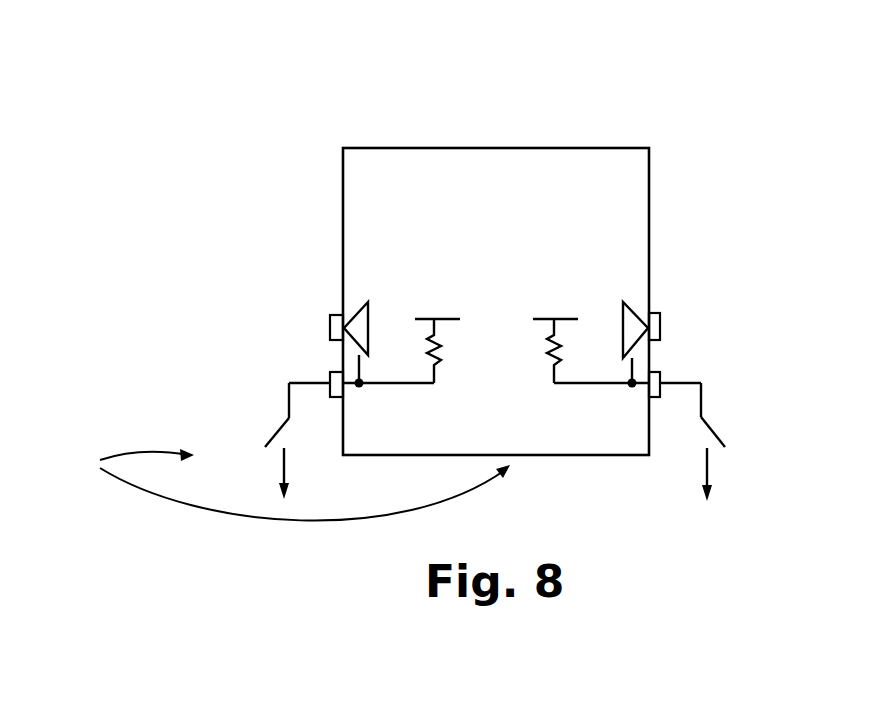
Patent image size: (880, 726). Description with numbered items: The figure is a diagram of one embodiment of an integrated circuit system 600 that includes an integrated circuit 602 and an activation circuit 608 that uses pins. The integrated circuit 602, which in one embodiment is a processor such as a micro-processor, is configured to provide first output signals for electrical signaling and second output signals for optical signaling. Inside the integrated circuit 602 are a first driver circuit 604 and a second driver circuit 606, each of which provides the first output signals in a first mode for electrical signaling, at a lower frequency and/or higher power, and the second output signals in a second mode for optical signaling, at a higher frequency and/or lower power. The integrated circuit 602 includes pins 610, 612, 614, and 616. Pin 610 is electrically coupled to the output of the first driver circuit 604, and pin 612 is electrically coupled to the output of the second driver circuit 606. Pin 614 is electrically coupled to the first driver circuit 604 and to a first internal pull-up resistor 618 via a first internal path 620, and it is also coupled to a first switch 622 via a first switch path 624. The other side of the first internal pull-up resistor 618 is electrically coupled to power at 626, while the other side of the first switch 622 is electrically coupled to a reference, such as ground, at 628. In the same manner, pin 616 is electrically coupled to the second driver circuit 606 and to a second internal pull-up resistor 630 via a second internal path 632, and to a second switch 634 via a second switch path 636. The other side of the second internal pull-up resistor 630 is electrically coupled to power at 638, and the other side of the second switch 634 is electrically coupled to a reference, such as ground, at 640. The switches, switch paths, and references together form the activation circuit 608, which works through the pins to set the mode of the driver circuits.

The integrated circuit system 600 is at (631, 88).
The integrated circuit 602 is at (493, 148).
The first driver circuit 604 is at (626, 306).
The second driver circuit 606 is at (362, 303).
The activation circuit 608 is at (286, 483).
The pin 610 is at (655, 313).
The pin 612 is at (333, 315).
The pin 614 is at (662, 375).
The pin 616 is at (330, 377).
The first internal pull-up resistor 618 is at (553, 365).
The first internal path 620 is at (630, 390).
The first switch 622 is at (713, 428).
The first switch path 624 is at (703, 380).
The power 626 is at (575, 318).
The reference 628 is at (707, 460).
The second internal pull-up resistor 630 is at (433, 367).
The second internal path 632 is at (359, 390).
The second switch 634 is at (280, 427).
The second switch path 636 is at (289, 383).
The power 638 is at (462, 319).
The reference 640 is at (284, 460).